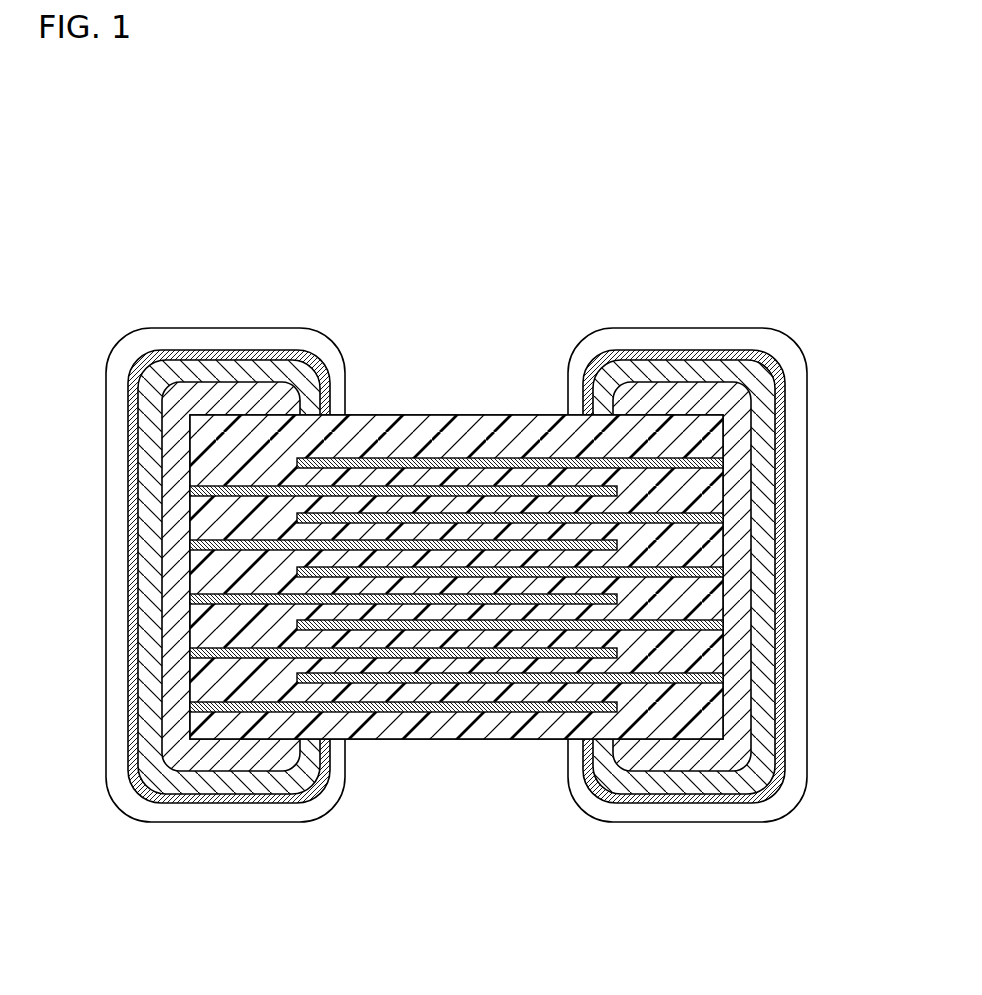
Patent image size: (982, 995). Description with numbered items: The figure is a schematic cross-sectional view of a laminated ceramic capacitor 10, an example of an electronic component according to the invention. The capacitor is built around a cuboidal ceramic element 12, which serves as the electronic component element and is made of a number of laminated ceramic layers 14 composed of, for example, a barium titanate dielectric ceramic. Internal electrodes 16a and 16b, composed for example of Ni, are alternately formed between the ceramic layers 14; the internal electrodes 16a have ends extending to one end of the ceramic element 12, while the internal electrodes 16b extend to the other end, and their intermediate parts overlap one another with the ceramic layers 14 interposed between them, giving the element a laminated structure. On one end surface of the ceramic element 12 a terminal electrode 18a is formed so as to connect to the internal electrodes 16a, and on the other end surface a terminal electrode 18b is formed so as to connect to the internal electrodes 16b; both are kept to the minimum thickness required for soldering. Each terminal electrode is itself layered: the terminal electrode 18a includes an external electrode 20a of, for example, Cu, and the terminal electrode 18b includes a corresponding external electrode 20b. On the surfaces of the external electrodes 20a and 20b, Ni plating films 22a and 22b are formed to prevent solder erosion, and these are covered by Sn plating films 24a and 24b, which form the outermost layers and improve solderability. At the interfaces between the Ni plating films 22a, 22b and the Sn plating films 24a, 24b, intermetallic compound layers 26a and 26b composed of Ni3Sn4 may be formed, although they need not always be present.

The laminated ceramic capacitor 10 is at (474, 203).
The ceramic element 12 is at (425, 412).
The ceramic layers 14 is at (547, 503).
The internal electrodes 16a is at (453, 462).
The internal electrodes 16b is at (372, 490).
The terminal electrode 18a is at (615, 281).
The terminal electrode 18b is at (47, 281).
The external electrode 20a is at (747, 403).
The external electrode 20b is at (170, 403).
The Ni plating film 22a is at (698, 365).
The Ni plating film 22b is at (215, 368).
The Sn plating film 24a is at (660, 342).
The Sn plating film 24b is at (255, 343).
The intermetallic compound layer 26a is at (783, 403).
The intermetallic compound layer 26b is at (130, 403).